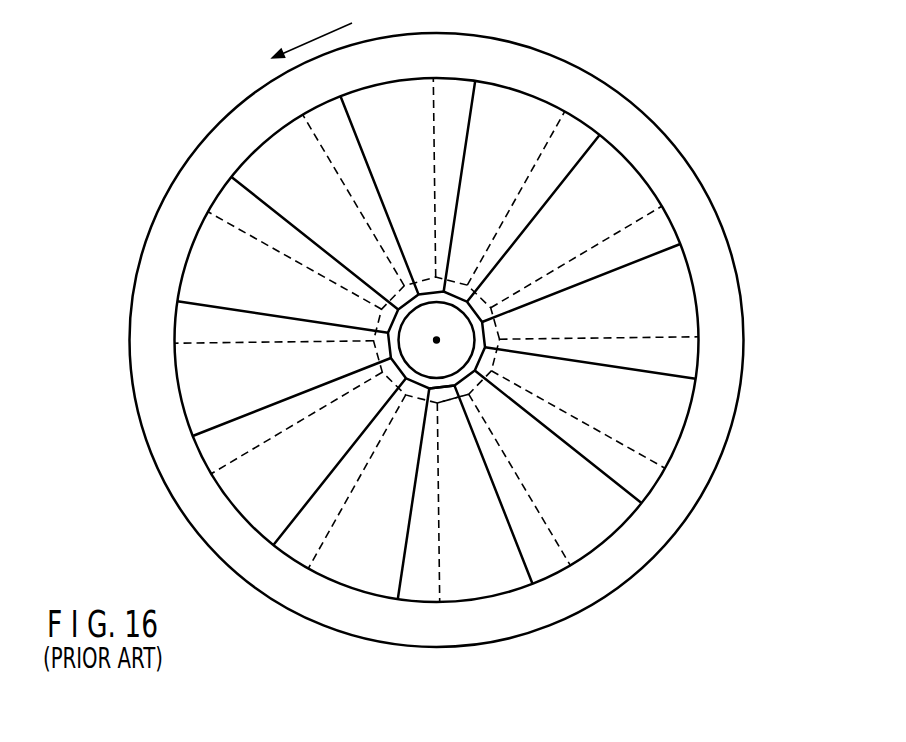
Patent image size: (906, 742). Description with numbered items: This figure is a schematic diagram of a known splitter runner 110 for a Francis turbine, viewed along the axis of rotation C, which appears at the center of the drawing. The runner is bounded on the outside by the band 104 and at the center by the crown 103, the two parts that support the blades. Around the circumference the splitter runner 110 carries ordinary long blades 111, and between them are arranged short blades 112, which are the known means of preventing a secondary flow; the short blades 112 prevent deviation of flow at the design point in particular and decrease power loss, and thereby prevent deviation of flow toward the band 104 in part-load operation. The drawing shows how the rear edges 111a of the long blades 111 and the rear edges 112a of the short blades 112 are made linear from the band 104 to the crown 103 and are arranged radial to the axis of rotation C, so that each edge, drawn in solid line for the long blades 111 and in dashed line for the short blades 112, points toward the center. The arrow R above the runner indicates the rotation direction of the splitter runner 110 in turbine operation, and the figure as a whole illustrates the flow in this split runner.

The splitter runner 110 is at (681, 168).
The band 104 is at (375, 620).
The crown 103 is at (395, 290).
The axis of rotation C is at (440, 339).
The rotation direction R is at (312, 38).
The long blades 111 is at (425, 523).
The rear edges of the long blades 111a is at (405, 528).
The short blades 112 is at (494, 549).
The rear edges of the short blades 112a is at (435, 577).